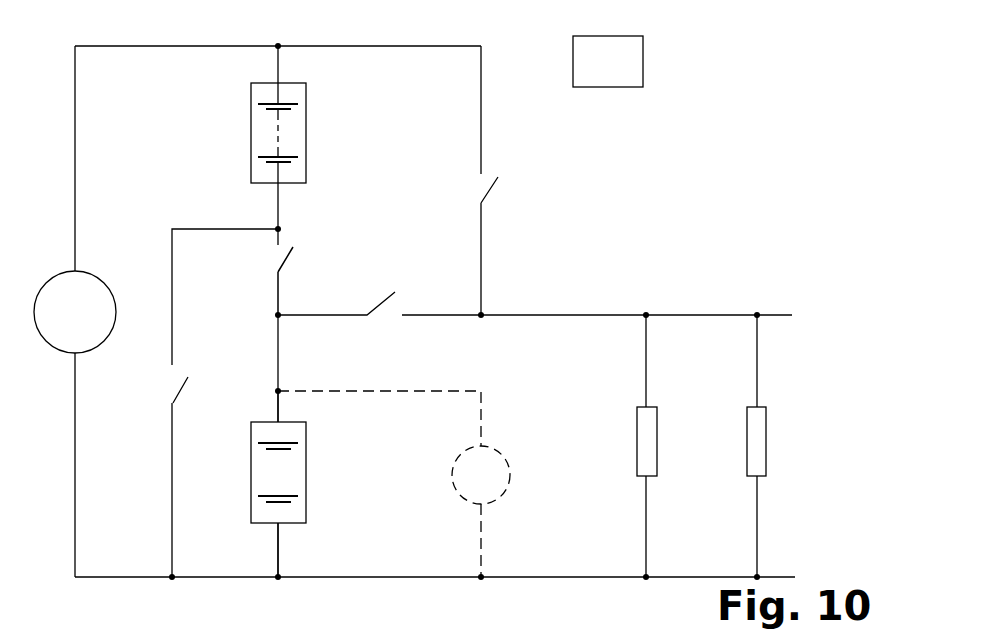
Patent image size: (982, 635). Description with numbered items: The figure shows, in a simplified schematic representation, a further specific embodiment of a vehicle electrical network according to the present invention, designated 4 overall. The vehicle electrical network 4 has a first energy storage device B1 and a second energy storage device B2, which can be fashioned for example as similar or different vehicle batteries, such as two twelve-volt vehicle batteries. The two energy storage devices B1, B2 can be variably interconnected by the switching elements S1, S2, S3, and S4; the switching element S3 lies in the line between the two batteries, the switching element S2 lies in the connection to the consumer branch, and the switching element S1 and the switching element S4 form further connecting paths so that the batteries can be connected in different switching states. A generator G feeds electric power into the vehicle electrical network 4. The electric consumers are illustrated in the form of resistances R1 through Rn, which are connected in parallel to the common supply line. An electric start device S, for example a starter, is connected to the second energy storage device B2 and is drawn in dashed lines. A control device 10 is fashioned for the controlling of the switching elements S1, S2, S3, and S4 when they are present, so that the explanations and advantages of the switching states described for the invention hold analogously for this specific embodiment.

The vehicle electrical network 4 is at (697, 95).
The control device 10 is at (609, 87).
The first energy storage device B1 is at (300, 145).
The second energy storage device B2 is at (301, 484).
The switching element S1 is at (507, 180).
The switching element S2 is at (379, 287).
The switching element S3 is at (303, 281).
The switching element S4 is at (225, 403).
The generator G is at (75, 312).
The electric start device S is at (394, 484).
The resistance R1 is at (666, 446).
The resistance Rn is at (776, 446).